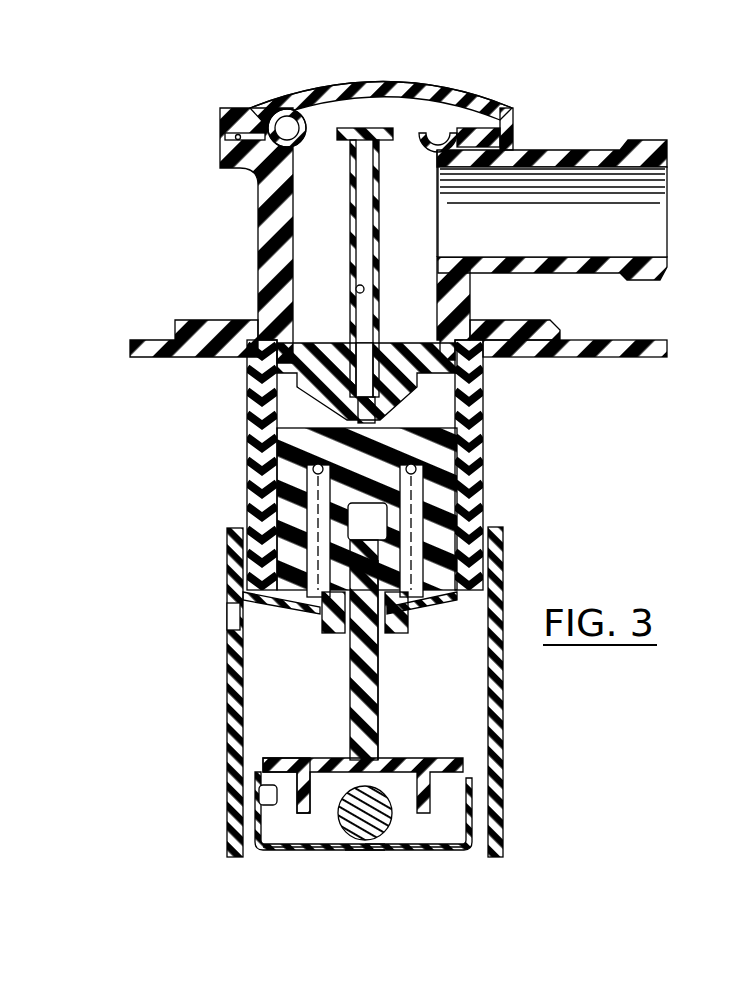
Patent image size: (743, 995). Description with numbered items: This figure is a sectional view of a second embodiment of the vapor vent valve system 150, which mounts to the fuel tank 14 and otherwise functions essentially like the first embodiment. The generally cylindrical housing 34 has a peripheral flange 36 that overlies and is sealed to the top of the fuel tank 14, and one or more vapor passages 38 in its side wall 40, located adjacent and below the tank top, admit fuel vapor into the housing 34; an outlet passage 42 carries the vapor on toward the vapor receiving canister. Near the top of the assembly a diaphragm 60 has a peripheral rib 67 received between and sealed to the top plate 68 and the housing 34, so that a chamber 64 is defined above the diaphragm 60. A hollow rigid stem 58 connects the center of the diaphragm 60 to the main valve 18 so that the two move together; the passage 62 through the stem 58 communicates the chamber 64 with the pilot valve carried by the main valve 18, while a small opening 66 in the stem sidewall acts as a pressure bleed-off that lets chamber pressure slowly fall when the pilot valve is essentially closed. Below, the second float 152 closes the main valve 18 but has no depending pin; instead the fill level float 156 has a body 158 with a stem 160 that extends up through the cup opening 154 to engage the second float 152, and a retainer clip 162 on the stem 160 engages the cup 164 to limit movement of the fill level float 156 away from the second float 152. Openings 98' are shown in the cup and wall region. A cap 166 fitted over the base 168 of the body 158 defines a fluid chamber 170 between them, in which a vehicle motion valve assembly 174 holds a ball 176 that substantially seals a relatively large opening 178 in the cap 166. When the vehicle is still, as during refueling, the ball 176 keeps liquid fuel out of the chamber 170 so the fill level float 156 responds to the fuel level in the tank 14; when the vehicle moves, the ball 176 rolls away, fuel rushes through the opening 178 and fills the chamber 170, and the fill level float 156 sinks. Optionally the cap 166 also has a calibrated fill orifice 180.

The fuel tank 14 is at (653, 347).
The main valve 18 is at (323, 403).
The housing 34 is at (427, 465).
The peripheral flange 36 is at (533, 320).
The vapor passages 38 is at (228, 613).
The side wall 40 is at (477, 483).
The outlet passage 42 is at (643, 182).
The stem 58 is at (352, 196).
The diaphragm 60 is at (313, 133).
The passage 62 is at (356, 292).
The chamber 64 is at (413, 117).
The small opening 66 is at (378, 227).
The peripheral rib 67 is at (497, 137).
The top plate 68 is at (387, 83).
The pins 98' is at (366, 572).
The valve system 150 is at (378, 510).
The second float 152 is at (297, 456).
The cup opening 154 is at (350, 630).
The fill level float 156 is at (374, 822).
The body 158 is at (385, 717).
The stem 160 is at (372, 677).
The retainer clip 162 is at (340, 600).
The cup 164 is at (272, 607).
The cap 166 is at (418, 852).
The base 168 is at (302, 768).
The fluid chamber 170 is at (277, 827).
The vehicle motion valve assembly 174 is at (375, 855).
The ball 176 is at (402, 813).
The opening 178 is at (365, 855).
The calibrated fill orifice 180 is at (320, 852).